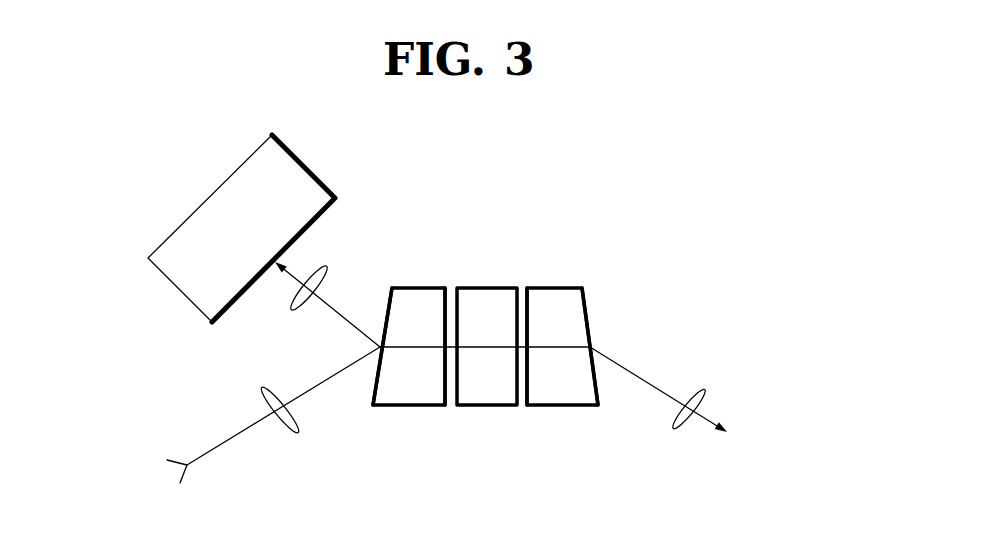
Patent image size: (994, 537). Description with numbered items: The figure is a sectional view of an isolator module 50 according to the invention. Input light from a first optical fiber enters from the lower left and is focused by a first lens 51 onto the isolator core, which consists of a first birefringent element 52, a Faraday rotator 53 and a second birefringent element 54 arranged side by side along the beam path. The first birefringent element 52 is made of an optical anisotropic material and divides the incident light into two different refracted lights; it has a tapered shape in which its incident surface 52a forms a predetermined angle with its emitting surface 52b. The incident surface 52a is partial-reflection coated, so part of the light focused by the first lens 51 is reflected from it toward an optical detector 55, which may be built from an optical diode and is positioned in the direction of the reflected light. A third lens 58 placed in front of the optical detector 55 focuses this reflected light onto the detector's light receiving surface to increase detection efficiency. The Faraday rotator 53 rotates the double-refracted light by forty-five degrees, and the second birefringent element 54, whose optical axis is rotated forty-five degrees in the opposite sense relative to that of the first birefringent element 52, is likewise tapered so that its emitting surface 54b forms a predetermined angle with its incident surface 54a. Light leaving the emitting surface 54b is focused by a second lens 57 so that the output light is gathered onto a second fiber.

The isolator module 50 is at (612, 203).
The first lens 51 is at (293, 435).
The first birefringent element 52 is at (410, 414).
The incident surface 52a is at (384, 312).
The emitting surface 52b is at (443, 308).
The Faraday rotator 53 is at (486, 414).
The second birefringent element 54 is at (569, 414).
The incident surface 54a is at (528, 312).
The emitting surface 54b is at (588, 315).
The optical detector 55 is at (212, 195).
The second lens 57 is at (703, 385).
The third lens 58 is at (292, 312).